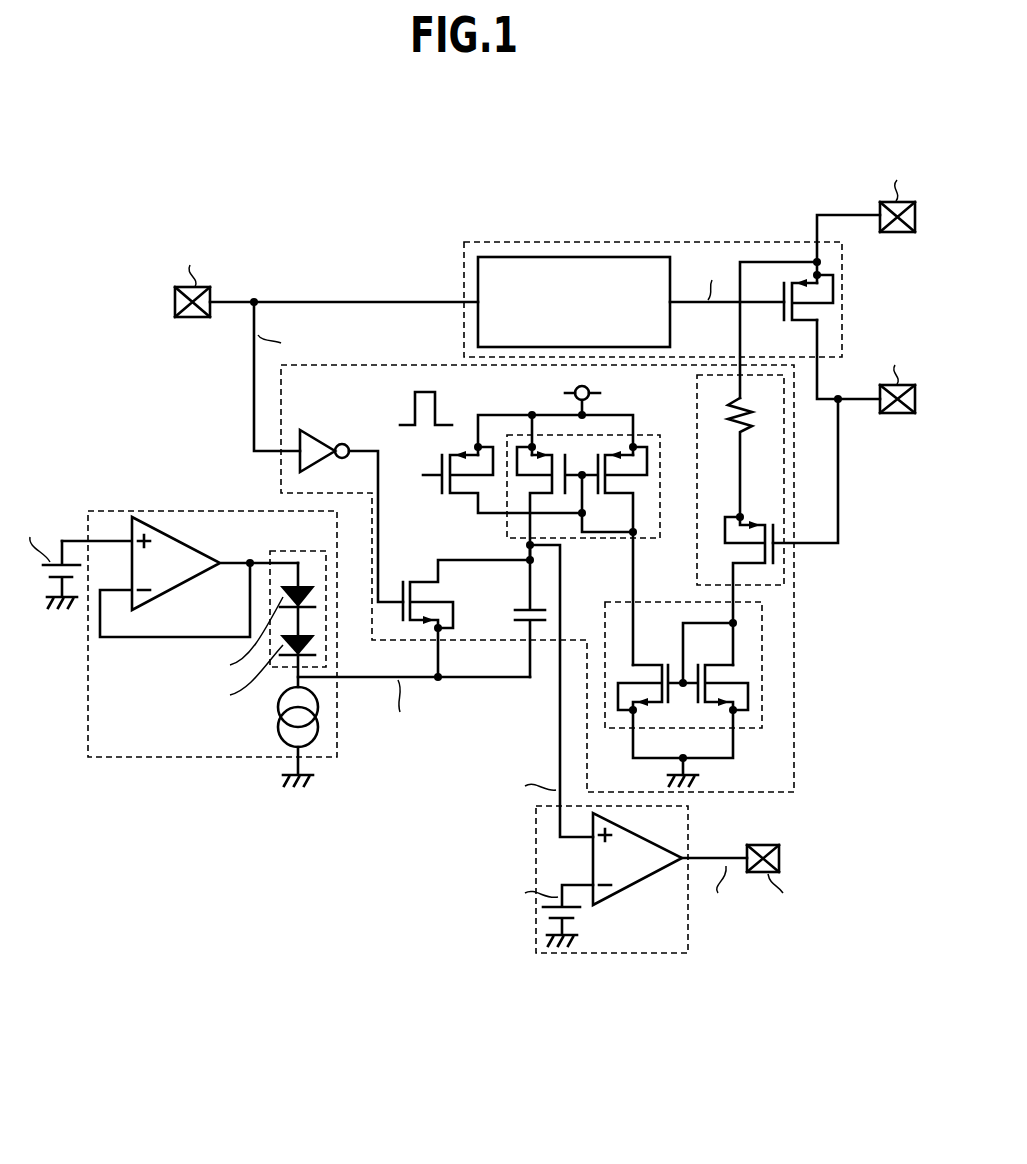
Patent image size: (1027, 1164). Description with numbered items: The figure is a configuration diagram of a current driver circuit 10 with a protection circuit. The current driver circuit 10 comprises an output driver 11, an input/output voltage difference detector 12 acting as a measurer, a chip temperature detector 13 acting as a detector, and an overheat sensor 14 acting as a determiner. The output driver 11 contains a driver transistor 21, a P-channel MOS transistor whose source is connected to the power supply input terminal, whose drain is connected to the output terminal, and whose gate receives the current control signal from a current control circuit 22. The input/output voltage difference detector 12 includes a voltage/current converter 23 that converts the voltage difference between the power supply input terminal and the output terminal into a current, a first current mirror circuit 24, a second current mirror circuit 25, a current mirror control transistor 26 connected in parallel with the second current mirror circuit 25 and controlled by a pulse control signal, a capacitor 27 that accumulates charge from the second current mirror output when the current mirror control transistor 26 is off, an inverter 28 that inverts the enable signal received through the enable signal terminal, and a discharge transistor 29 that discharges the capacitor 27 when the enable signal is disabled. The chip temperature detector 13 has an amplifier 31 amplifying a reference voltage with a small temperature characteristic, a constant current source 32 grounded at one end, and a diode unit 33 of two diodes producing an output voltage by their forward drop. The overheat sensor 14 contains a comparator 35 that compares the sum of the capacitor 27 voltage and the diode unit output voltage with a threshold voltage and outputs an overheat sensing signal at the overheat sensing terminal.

The current driver circuit 10 is at (530, 170).
The output driver 11 is at (486, 241).
The input/output voltage difference detector 12 is at (800, 757).
The chip temperature detector 13 is at (130, 758).
The overheat sensor 14 is at (618, 954).
The driver transistor 21 is at (838, 289).
The current control circuit 22 is at (618, 257).
The voltage/current converter 23 is at (790, 583).
The first current mirror circuit 24 is at (765, 652).
The second current mirror circuit 25 is at (655, 435).
The current mirror control transistor 26 is at (470, 446).
The capacitor 27 is at (525, 610).
The inverter 28 is at (322, 440).
The discharge transistor 29 is at (424, 581).
The amplifier 31 is at (178, 535).
The constant current source 32 is at (278, 722).
The diode unit 33 is at (300, 551).
The comparator 35 is at (636, 888).